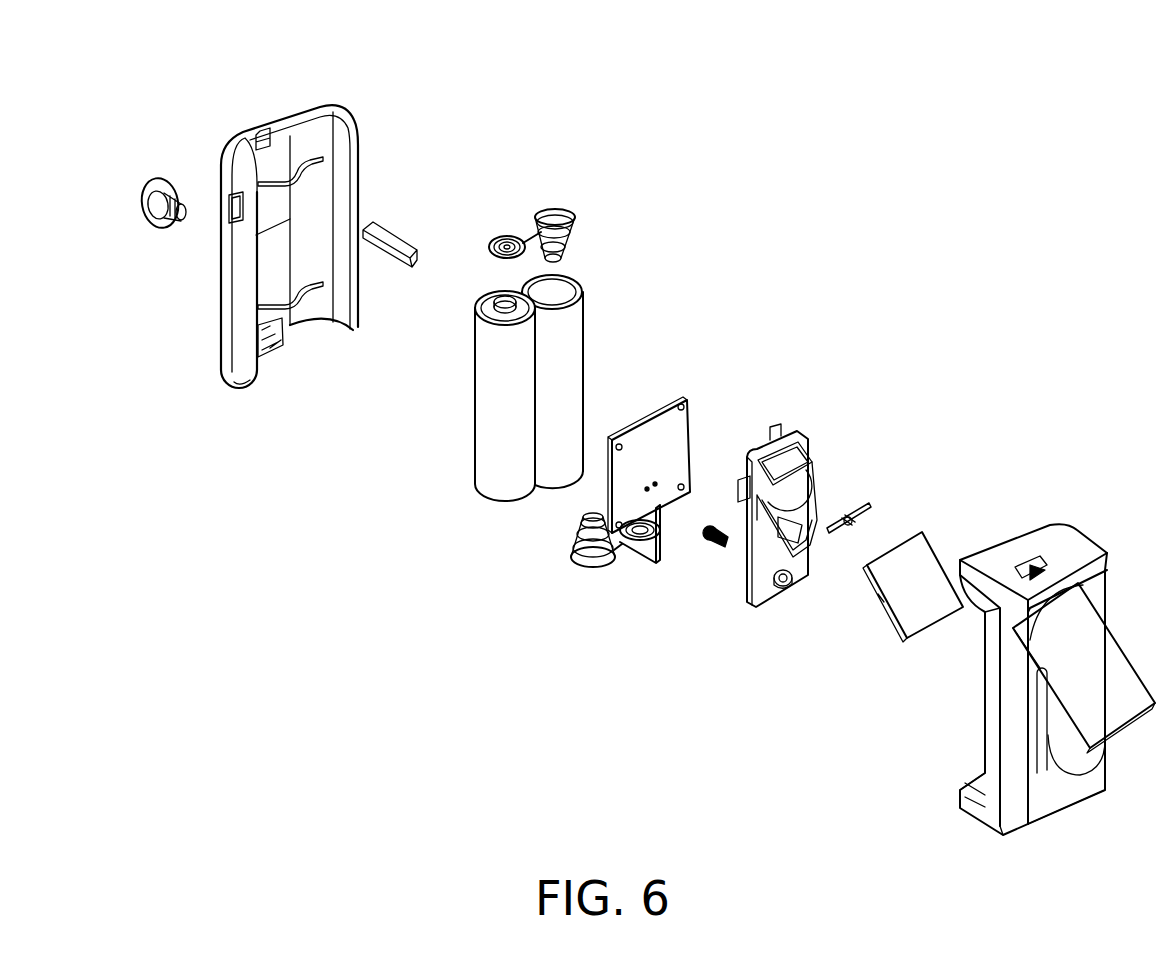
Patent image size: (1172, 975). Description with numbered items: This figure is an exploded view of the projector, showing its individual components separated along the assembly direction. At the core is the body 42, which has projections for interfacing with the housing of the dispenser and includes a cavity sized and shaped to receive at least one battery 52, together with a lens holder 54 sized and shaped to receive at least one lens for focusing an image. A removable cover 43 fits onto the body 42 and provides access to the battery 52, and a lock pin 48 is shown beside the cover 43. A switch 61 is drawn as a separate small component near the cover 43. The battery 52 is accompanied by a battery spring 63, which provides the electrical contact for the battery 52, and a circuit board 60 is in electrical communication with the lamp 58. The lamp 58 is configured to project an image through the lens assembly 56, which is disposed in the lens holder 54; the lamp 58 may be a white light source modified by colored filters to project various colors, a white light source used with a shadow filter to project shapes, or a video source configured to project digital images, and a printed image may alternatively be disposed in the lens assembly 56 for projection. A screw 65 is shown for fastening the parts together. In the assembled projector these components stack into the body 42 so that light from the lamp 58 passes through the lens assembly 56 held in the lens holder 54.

The body 42 is at (1024, 545).
The removable cover 43 is at (258, 100).
The lock pin 48 is at (128, 192).
The battery 52 is at (450, 502).
The lens holder 54 is at (797, 405).
The lens assembly 56 is at (883, 633).
The lamp 58 is at (863, 490).
The circuit board 60 is at (668, 390).
The switch 61 is at (396, 222).
The battery spring 63 is at (563, 188).
The screw 65 is at (708, 558).